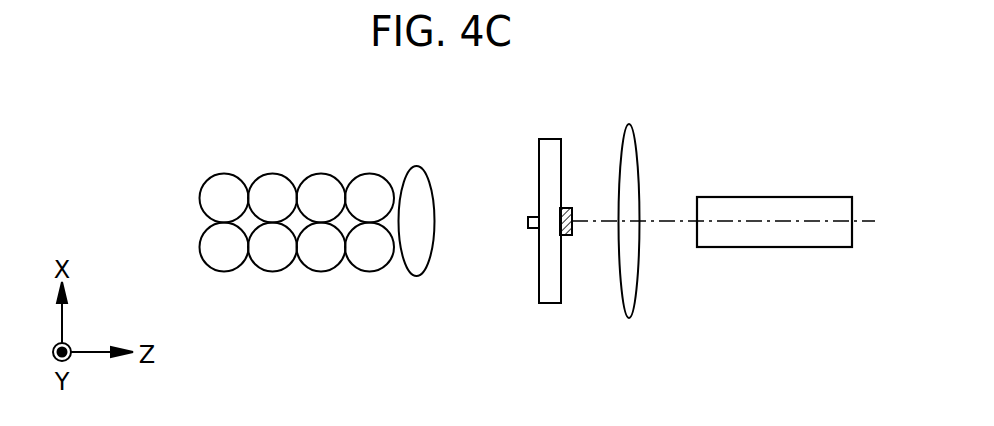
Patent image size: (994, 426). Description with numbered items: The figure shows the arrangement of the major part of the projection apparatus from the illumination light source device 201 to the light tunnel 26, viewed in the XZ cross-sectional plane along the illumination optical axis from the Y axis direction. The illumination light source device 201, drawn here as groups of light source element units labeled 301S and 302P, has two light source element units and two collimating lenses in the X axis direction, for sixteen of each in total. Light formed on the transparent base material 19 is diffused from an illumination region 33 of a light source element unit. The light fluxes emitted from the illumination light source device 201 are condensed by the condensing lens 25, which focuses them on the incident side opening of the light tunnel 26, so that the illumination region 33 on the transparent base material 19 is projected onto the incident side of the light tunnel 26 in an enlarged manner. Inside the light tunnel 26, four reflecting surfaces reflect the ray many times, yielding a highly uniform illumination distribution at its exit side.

The illumination light source device 201 is at (297, 213).
The S-polarized light sources 301S is at (200, 153).
The P-polarized light sources 302P is at (297, 153).
The transparent base material 19 is at (549, 139).
The illumination region 33 is at (568, 208).
The condensing lens 25 is at (629, 123).
The light tunnel 26 is at (781, 197).